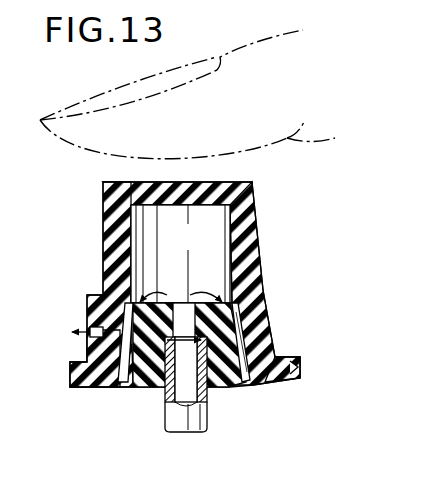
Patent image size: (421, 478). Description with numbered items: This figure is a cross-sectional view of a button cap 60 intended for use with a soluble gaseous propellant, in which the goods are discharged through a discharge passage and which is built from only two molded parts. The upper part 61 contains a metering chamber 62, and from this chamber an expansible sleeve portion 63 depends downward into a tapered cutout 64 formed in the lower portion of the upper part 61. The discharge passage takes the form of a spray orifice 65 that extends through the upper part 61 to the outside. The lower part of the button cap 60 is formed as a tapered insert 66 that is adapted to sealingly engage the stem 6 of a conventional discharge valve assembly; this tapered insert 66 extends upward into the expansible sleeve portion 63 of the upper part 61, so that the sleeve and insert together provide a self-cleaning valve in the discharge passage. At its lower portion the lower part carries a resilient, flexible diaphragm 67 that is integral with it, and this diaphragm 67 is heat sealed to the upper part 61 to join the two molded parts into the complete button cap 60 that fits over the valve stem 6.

The stem 6 is at (168, 418).
The button cap 60 is at (274, 233).
The upper part 61 is at (248, 265).
The metering chamber 62 is at (216, 245).
The expansible sleeve portion 63 is at (238, 330).
The tapered cutout 64 is at (280, 360).
The spray orifice 65 is at (100, 316).
The tapered insert 66 is at (228, 387).
The diaphragm 67 is at (120, 383).